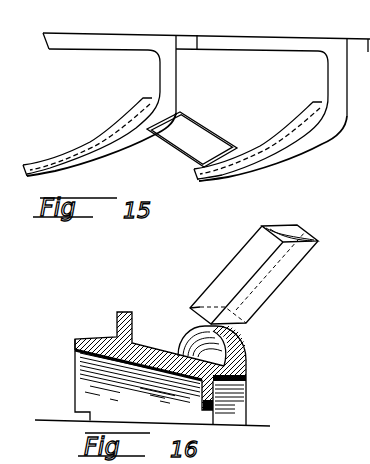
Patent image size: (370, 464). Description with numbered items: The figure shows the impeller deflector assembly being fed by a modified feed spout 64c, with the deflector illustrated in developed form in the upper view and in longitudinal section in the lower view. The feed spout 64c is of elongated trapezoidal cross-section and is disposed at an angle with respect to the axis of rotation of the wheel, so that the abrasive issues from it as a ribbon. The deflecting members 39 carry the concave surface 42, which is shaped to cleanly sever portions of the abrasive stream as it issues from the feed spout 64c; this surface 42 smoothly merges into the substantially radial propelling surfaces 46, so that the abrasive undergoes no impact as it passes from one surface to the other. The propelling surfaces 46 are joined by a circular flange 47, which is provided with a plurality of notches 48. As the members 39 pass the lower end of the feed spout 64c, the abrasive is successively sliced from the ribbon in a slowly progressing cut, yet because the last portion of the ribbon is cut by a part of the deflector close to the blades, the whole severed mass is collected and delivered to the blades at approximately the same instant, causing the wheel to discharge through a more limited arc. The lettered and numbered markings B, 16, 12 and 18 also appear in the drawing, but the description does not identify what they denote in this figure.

In FIG. 15, the circular flange 47 is at (298, 34).
In FIG. 16, the circular flange 47 is at (118, 312).
In FIG. 15, the notches 48 is at (207, 33).
In FIG. 15, the propelling surfaces 46 is at (328, 80).
In FIG. 15, the deflecting members 39 is at (293, 148).
In FIG. 15, the feed spout 64c is at (218, 127).
In FIG. 16, the feed spout 64c is at (277, 274).
In FIG. 16, the surface 42 is at (182, 339).
In FIG. 16, the block B is at (248, 392).
In FIG. 16, the element 16 is at (369, 282).
In FIG. 16, the element 12 is at (369, 378).
In FIG. 16, the element 18 is at (369, 433).